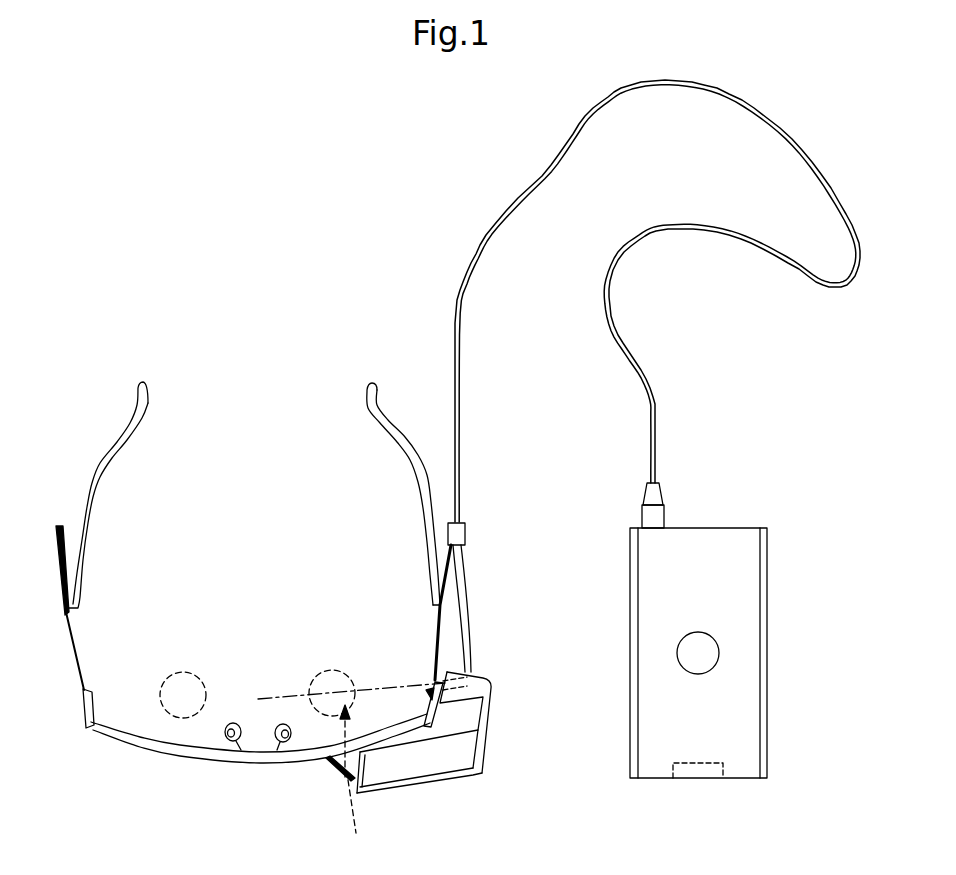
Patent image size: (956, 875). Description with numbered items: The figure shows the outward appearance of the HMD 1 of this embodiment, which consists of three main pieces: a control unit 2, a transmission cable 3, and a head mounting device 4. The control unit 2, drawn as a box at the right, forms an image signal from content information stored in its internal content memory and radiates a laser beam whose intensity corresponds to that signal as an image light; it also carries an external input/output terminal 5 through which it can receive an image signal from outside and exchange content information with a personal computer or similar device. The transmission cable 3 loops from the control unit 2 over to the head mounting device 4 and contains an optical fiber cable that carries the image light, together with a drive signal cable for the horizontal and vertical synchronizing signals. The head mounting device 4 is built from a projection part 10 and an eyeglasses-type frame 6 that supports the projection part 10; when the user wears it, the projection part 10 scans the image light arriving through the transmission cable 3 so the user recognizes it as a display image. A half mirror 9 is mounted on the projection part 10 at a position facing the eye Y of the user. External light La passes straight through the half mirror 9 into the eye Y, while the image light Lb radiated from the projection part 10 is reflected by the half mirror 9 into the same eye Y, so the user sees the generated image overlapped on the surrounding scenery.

The HMD 1 is at (458, 468).
The control unit 2 is at (757, 590).
The transmission cable 3 is at (692, 92).
The head mounting device 4 is at (283, 320).
The external input/output terminal 5 is at (697, 775).
The eyeglasses-type frame 6 is at (152, 780).
The half mirror 9 is at (330, 765).
The projection part 10 is at (482, 672).
The eye Y is at (320, 668).
The external light La is at (350, 812).
The image light Lb is at (360, 762).